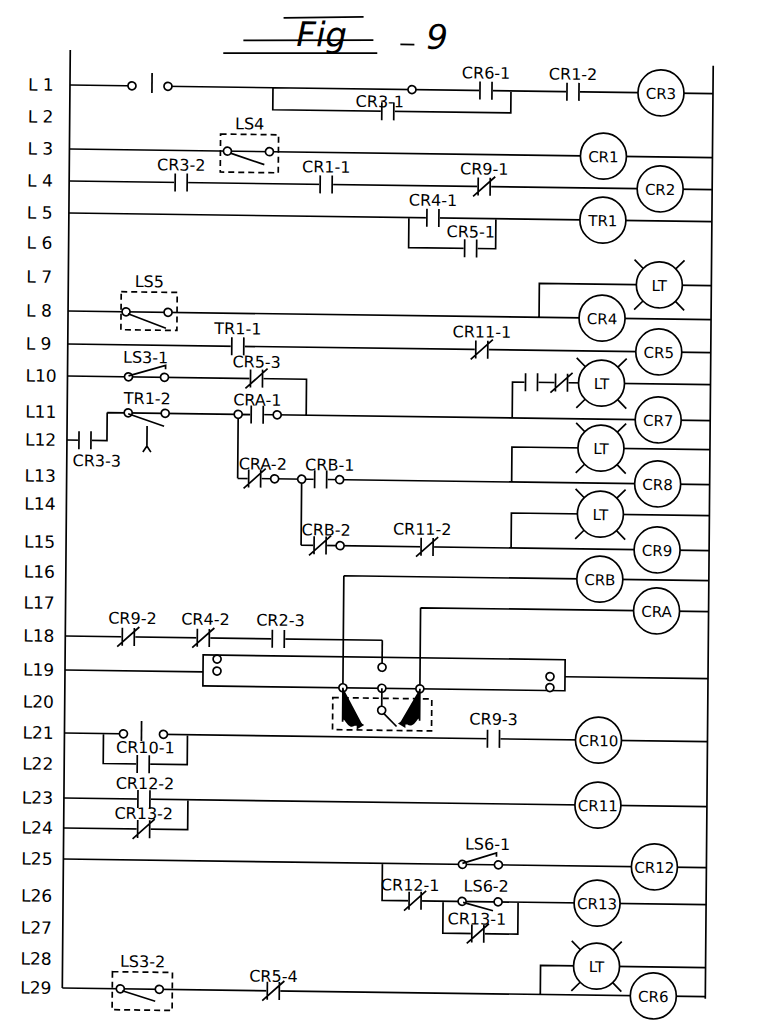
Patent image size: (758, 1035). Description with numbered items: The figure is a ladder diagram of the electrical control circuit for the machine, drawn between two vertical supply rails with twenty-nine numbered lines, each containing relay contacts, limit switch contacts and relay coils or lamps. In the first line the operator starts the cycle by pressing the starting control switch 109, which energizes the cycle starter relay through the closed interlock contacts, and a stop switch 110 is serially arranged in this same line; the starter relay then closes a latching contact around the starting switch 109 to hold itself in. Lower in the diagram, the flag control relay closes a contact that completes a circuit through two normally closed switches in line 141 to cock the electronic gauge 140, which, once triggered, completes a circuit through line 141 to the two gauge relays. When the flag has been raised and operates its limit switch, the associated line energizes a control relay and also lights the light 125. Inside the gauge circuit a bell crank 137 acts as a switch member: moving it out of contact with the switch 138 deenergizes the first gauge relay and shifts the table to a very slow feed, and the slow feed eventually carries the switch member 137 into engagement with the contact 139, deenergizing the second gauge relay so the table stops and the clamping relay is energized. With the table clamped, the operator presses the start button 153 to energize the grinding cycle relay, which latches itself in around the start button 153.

The stop switch 110 is at (158, 67).
The starting control switch 109 is at (409, 82).
The light 125 is at (664, 246).
The line 141 is at (366, 640).
The electronic gauge 140 is at (505, 660).
The bell crank 137 is at (437, 698).
The contact 139 is at (346, 724).
The switch 138 is at (437, 727).
The start button 153 is at (153, 715).